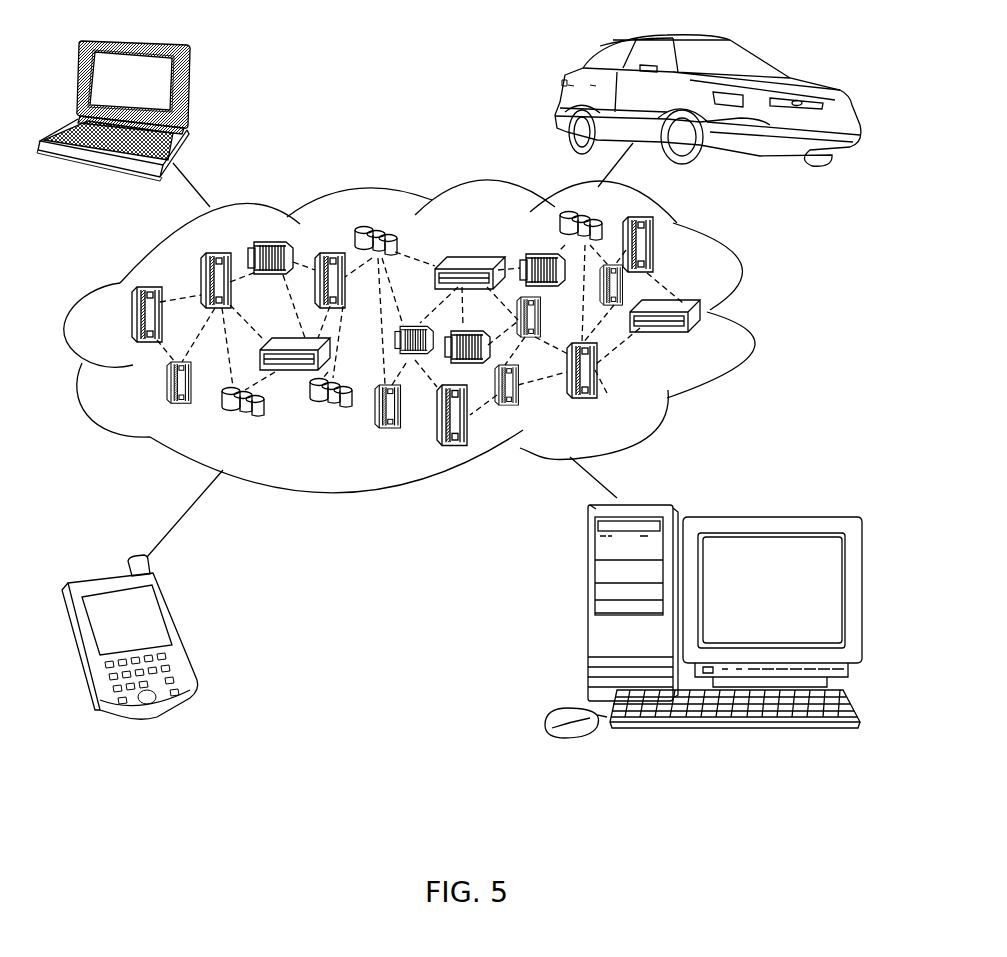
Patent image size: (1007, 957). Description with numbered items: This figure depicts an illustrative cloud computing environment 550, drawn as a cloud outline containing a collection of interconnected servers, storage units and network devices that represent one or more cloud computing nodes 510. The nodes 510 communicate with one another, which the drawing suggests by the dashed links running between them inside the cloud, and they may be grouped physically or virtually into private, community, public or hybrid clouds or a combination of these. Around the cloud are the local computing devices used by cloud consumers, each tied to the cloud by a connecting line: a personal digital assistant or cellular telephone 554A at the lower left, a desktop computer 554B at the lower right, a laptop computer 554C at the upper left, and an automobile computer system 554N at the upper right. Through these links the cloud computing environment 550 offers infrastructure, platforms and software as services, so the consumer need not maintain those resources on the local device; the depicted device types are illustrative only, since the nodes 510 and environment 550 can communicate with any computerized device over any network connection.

The cloud computing nodes 510 is at (713, 335).
The cloud computing environment 550 is at (740, 275).
The personal digital assistant or cellular telephone 554A is at (183, 630).
The desktop computer 554B is at (588, 612).
The laptop computer 554C is at (190, 87).
The automobile computer system 554N is at (560, 90).